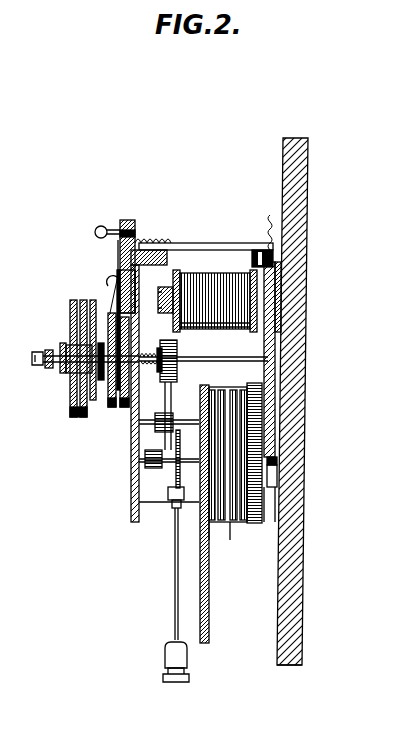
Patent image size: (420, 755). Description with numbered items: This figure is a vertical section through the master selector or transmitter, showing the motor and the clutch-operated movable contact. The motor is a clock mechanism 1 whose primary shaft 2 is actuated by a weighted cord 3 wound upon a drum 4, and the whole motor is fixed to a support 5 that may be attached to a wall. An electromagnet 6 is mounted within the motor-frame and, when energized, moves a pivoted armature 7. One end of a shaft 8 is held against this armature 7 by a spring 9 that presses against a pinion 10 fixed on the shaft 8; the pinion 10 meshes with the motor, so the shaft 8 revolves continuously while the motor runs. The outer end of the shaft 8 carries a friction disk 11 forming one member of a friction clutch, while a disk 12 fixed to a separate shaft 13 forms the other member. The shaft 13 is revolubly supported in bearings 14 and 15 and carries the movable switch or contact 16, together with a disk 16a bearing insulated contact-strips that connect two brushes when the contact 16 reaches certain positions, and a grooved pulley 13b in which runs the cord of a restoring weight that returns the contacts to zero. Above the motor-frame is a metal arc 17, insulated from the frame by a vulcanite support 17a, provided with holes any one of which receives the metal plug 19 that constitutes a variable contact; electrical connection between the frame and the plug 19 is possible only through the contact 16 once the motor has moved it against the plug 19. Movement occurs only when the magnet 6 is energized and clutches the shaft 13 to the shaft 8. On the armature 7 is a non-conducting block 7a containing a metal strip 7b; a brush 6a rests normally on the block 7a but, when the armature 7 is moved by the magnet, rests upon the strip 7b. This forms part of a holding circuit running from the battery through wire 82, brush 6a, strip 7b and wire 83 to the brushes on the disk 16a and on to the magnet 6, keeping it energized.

The clock mechanism 1 is at (135, 497).
The primary shaft 2 is at (137, 460).
The weighted cord 3 is at (210, 600).
The drum 4 is at (232, 522).
The support 5 is at (284, 650).
The electromagnet 6 is at (207, 330).
The brush 6a is at (203, 247).
The armature 7 is at (273, 413).
The non-conducting block 7a is at (282, 255).
The metal strip 7b is at (258, 250).
The shaft 8 is at (218, 362).
The spring 9 is at (152, 368).
The pinion 10 is at (178, 368).
The friction disk 11 is at (123, 408).
The disk 12 is at (112, 408).
The shaft 13 is at (52, 352).
The grooved pulley 13b is at (102, 382).
The bearing 14 is at (92, 330).
The bearing 15 is at (62, 373).
The movable contact 16 is at (110, 303).
The disk 16a is at (82, 415).
The arc 17 is at (125, 222).
The vulcanite support 17a is at (118, 258).
The metal plug 19 is at (96, 228).
The wire 82 is at (172, 240).
The wire 83 is at (267, 221).